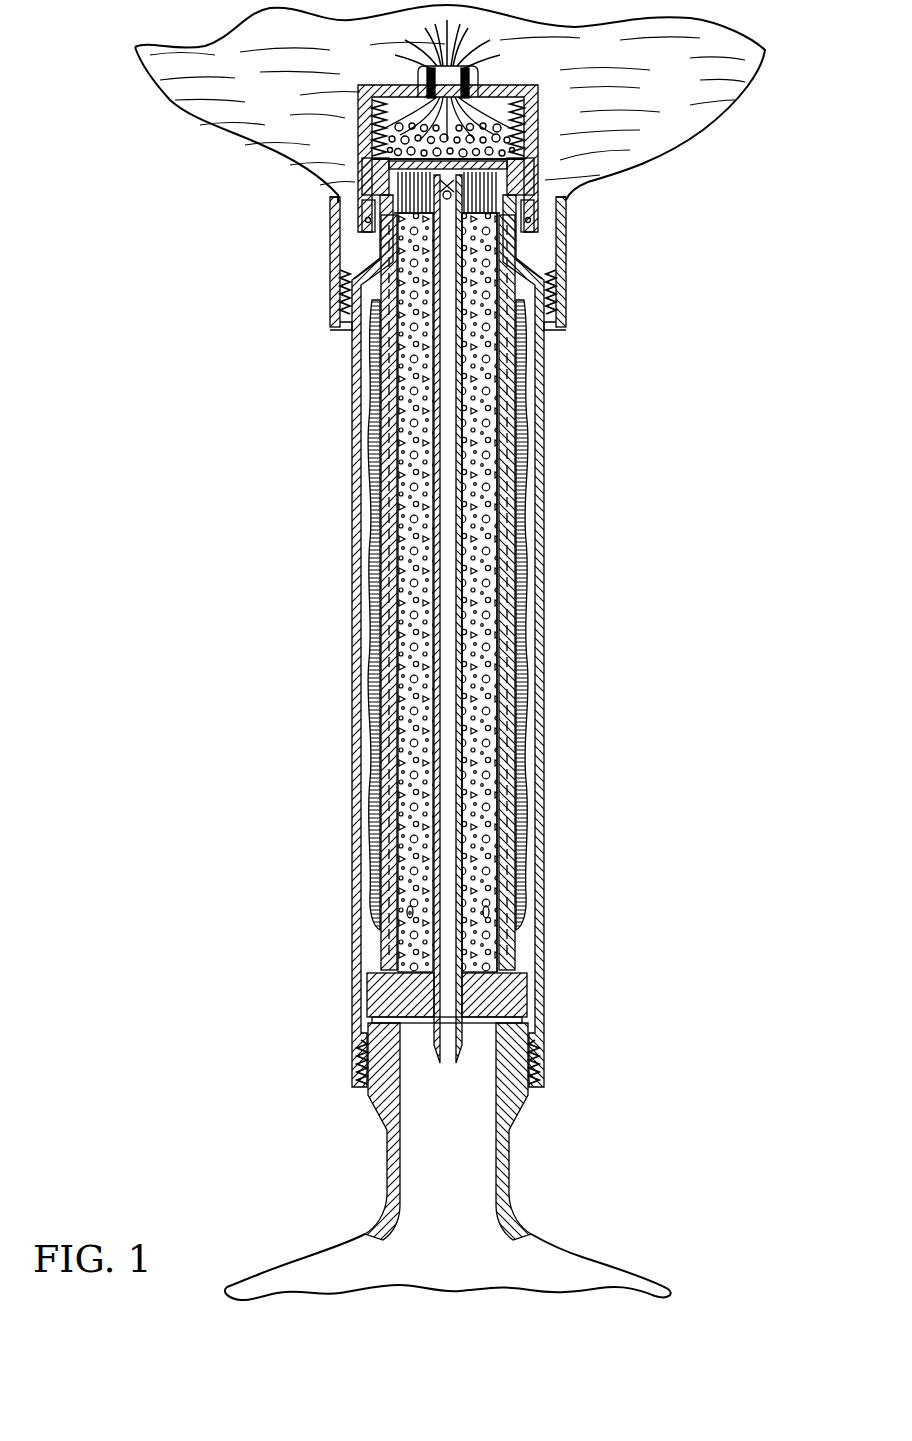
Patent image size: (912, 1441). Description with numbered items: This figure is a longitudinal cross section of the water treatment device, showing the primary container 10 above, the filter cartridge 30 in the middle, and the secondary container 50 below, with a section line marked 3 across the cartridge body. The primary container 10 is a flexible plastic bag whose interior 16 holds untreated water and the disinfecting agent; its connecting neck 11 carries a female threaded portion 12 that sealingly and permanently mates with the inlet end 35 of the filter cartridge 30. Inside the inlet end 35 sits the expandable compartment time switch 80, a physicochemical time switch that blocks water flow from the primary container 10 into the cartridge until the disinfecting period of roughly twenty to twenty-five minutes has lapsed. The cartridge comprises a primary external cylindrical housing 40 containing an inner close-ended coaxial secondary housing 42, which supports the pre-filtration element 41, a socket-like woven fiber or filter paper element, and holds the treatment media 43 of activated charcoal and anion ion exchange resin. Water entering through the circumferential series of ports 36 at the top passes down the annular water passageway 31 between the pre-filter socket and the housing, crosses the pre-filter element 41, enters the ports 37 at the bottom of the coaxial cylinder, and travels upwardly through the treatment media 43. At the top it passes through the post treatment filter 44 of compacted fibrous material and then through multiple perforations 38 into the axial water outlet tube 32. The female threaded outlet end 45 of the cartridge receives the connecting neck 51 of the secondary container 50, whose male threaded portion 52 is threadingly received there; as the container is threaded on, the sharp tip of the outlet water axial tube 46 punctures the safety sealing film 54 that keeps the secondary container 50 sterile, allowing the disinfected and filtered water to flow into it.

The primary container 10 is at (178, 102).
The interior 16 is at (620, 100).
The expandable compartment time switch 80 is at (352, 125).
The ports 36 is at (342, 207).
The inlet end 35 is at (348, 268).
The female threaded portion 12 is at (339, 292).
The connecting neck 11 is at (337, 307).
The perforations 38 is at (455, 199).
The post treatment filter 44 is at (517, 243).
The filter cartridge 30 is at (446, 707).
The water passageway 31 is at (365, 556).
The axial water outlet tube 32 is at (462, 433).
The primary external cylindrical housing 40 is at (532, 470).
The pre-filtration element 41 is at (547, 493).
The secondary housing 42 is at (545, 523).
The treatment media 43 is at (483, 580).
The ports 37 is at (405, 908).
The safety sealing film 54 is at (370, 1000).
The outlet end 45 is at (360, 1063).
The outlet water axial tube 46 is at (460, 1058).
The connecting neck 51 is at (512, 1127).
The male threaded portion 52 is at (390, 1078).
The secondary container 50 is at (320, 1257).
The section line 3- 3 is at (229, 702).